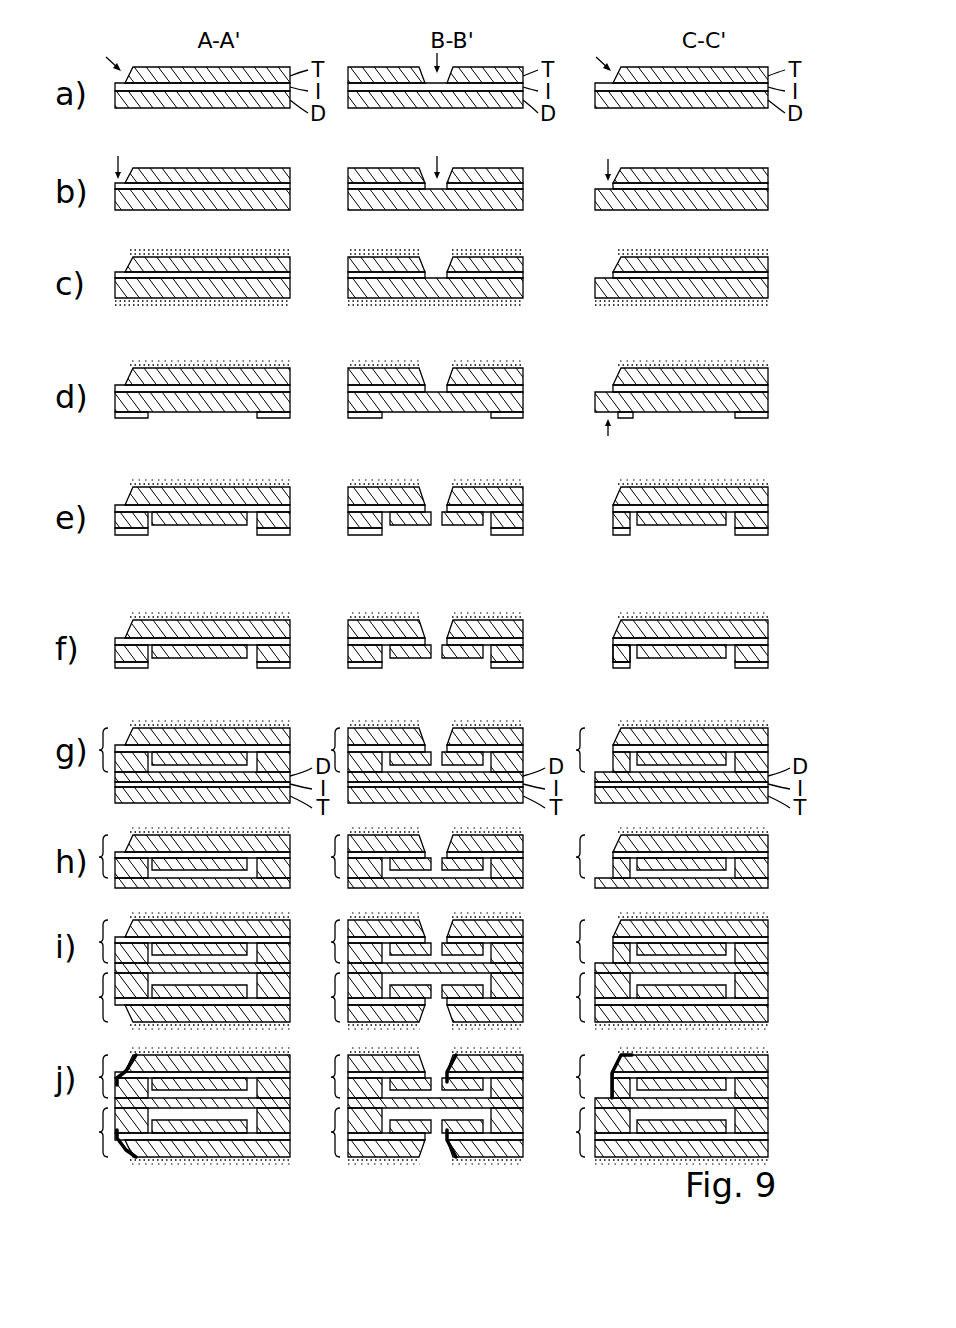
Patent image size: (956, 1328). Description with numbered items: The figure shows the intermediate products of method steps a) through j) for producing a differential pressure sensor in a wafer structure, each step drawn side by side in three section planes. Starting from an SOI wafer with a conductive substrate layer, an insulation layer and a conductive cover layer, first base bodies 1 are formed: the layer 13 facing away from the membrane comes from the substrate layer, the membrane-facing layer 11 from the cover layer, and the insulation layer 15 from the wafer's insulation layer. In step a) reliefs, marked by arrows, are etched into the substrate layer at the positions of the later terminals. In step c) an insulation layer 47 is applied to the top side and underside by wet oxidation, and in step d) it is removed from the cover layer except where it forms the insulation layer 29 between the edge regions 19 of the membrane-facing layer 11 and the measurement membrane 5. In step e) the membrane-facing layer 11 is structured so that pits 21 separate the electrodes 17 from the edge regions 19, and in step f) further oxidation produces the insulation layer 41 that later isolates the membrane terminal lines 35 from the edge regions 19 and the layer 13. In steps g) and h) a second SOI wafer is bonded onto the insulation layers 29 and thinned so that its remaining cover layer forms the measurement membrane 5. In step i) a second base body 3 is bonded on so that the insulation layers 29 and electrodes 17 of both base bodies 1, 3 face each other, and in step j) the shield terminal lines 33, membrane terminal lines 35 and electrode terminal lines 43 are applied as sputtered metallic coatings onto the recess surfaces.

The first base body 1 is at (335, 913).
The second base body 3 is at (426, 1065).
The measurement membrane 5 is at (290, 884).
The membrane-facing layer 11 is at (298, 519).
The layer facing away from the membrane 13 is at (153, 80).
The insulation layer 15 is at (292, 186).
The electrode 17 is at (208, 524).
The edge region 19 is at (115, 518).
The pit 21 is at (155, 528).
The insulation layer 29 is at (125, 418).
The shield terminal line 33 is at (128, 1057).
The membrane terminal line 35 is at (624, 1052).
The insulation layer 41 is at (613, 651).
The electrode terminal line 43 is at (454, 1056).
The insulation layer 47 is at (160, 255).